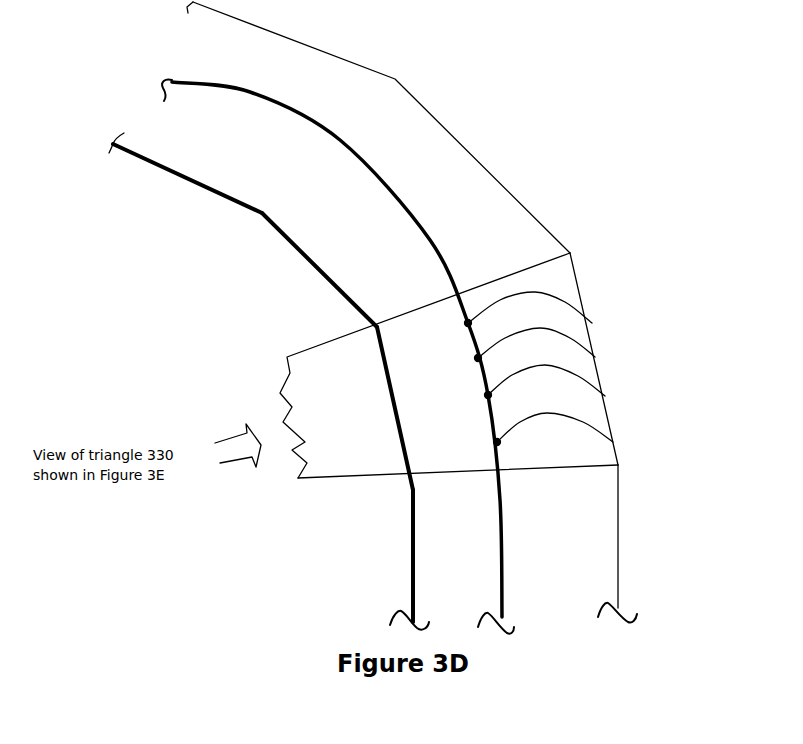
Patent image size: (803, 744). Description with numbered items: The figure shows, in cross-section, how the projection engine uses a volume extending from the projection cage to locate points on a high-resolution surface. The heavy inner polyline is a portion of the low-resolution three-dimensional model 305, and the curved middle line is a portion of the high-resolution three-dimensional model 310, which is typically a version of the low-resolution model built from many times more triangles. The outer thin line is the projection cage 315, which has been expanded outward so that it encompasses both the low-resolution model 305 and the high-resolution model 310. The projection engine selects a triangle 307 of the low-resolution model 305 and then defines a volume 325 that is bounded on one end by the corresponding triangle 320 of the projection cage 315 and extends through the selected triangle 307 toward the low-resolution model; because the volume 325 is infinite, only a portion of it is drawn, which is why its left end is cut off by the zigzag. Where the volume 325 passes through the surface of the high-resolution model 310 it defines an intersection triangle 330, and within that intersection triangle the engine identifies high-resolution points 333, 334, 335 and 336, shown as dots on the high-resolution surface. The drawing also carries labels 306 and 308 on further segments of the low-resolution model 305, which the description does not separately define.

The low-resolution 3D model 305 is at (158, 166).
The inclined wall segment 306 is at (289, 247).
The triangle of the low-resolution 3D model 307 is at (381, 348).
The lower wall 308 is at (411, 547).
The high-resolution 3D model 310 is at (503, 608).
The projection cage 315 is at (618, 533).
The triangle of the projection cage 320 is at (580, 268).
The volume 325 is at (553, 257).
The intersection triangle 330 is at (505, 422).
The high-resolution point 333 is at (592, 323).
The high-resolution point 334 is at (595, 357).
The high-resolution point 335 is at (605, 396).
The high-resolution point 336 is at (613, 442).